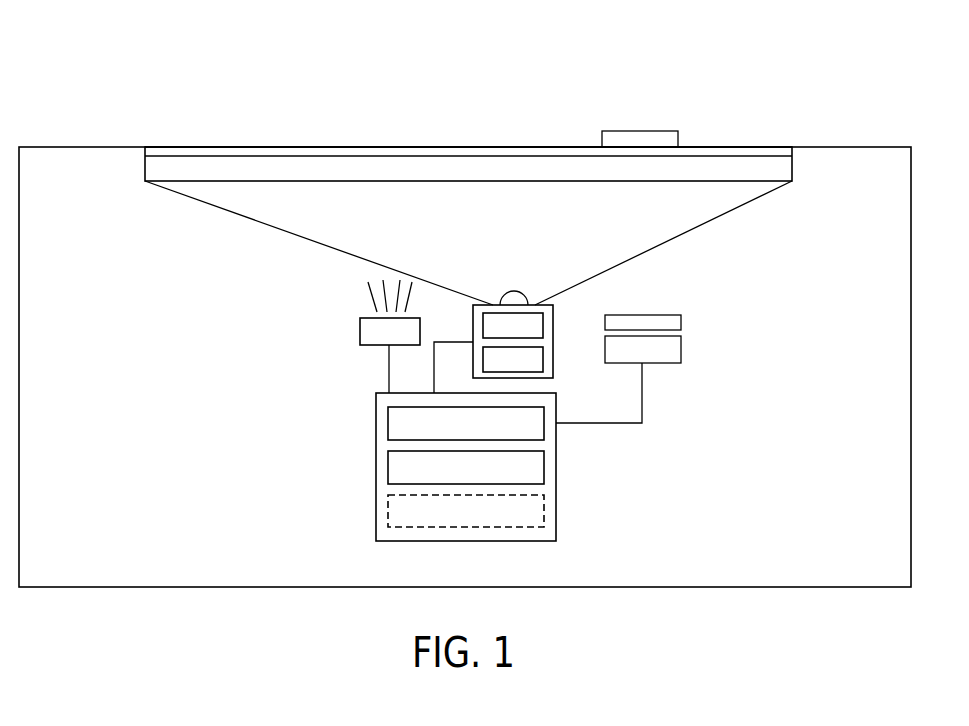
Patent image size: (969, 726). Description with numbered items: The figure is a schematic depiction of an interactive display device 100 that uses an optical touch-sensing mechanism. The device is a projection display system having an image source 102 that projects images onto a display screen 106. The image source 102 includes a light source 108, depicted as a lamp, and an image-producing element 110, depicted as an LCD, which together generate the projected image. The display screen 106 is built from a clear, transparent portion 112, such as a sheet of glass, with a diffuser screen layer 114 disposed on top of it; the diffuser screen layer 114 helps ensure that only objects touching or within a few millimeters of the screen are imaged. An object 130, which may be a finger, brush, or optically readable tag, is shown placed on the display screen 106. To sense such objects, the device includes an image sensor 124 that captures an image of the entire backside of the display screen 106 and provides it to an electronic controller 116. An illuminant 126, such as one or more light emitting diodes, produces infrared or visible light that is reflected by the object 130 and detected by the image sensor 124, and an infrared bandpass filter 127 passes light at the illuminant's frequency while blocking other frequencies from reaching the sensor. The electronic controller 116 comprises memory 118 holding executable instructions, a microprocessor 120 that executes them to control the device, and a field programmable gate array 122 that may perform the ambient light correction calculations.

The interactive display device 100 is at (98, 82).
The display screen 106 is at (195, 146).
The clear, transparent portion 112 is at (272, 169).
The diffuser screen layer 114 is at (340, 153).
The object 130 is at (613, 140).
The image source 102 is at (553, 323).
The image-producing element 110 is at (483, 323).
The light source 108 is at (545, 358).
The illuminant 126 is at (360, 330).
The infrared bandpass filter 127 is at (672, 324).
The image sensor 124 is at (672, 352).
The electronic controller 116 is at (376, 525).
The memory 118 is at (388, 418).
The microprocessor 120 is at (544, 461).
The field programmable gate array 122 is at (544, 505).